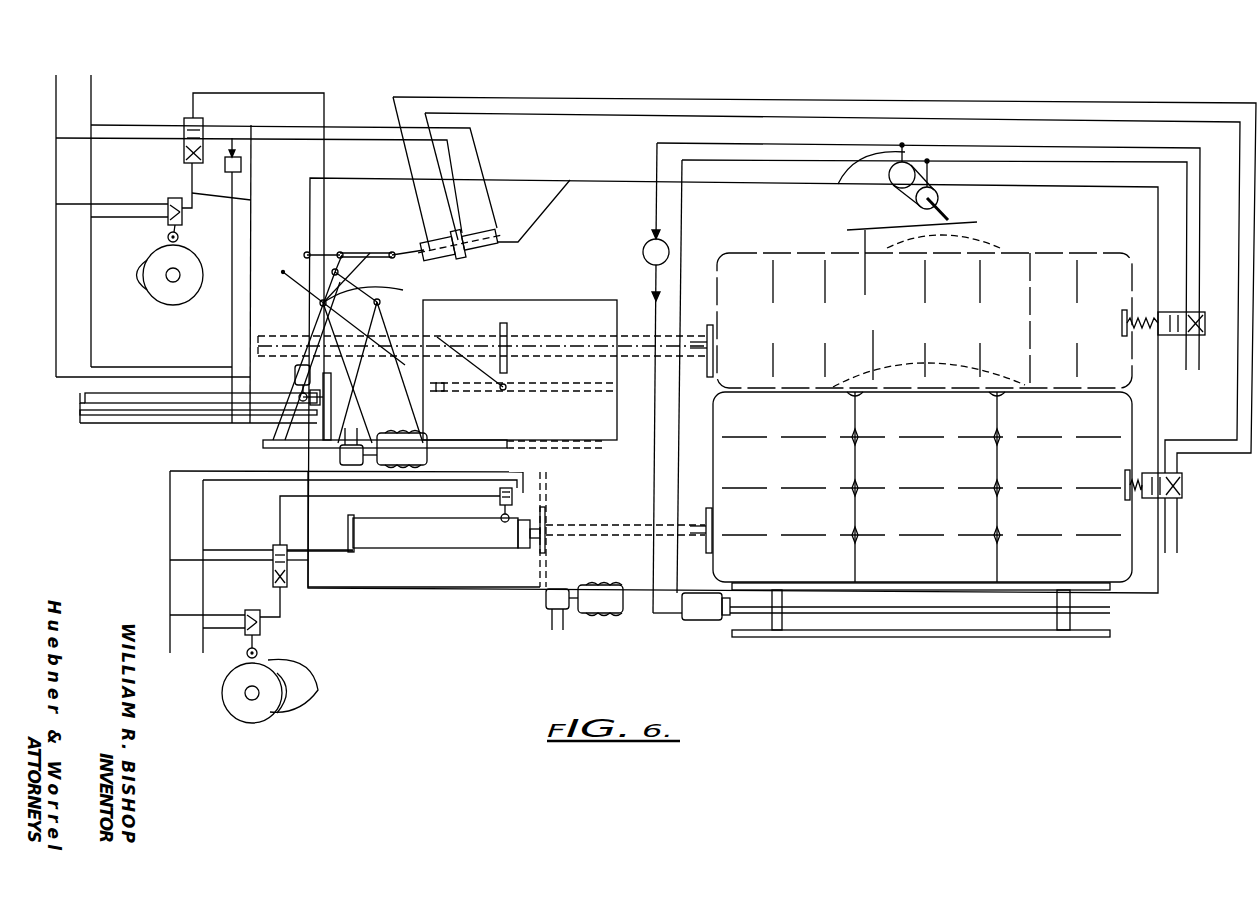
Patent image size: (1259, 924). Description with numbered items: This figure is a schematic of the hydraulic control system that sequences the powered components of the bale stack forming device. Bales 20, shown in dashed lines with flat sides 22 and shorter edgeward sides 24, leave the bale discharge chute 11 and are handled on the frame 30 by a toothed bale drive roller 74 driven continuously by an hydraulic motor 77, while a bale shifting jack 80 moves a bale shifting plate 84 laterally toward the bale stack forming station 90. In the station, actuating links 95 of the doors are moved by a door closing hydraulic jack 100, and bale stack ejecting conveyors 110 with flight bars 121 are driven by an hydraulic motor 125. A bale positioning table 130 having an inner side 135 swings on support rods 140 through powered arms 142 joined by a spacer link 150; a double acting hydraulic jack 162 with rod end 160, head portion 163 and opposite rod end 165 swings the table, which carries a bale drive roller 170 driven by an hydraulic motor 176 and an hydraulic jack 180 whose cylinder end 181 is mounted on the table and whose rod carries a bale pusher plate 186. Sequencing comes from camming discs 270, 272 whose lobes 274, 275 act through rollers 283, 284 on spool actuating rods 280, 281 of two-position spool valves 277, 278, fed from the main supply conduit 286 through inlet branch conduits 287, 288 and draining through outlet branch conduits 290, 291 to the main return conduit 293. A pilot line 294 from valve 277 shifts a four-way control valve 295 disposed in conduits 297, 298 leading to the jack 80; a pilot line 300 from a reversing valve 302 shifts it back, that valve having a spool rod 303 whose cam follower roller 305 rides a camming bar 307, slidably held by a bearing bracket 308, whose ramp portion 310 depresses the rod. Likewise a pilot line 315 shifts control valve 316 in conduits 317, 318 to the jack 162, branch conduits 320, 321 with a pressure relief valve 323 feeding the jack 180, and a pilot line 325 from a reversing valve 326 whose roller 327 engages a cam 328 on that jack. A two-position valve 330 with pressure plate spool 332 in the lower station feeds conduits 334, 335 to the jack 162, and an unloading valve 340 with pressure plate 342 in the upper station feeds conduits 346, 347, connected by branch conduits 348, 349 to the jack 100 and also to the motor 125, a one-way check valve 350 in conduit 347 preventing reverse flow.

The bale discharge chute 11 is at (528, 300).
The bales 20 is at (943, 380).
The flat sides 22 is at (755, 253).
The edgeward sides 24 is at (717, 305).
The frame 30 is at (645, 180).
The toothed bale drive roller 74 is at (603, 614).
The hydraulic motor 77 is at (556, 600).
The hydraulic bale shifting jack 80 is at (445, 548).
The bale shifting plate 84 is at (548, 516).
The bale stack forming station 90 is at (836, 332).
The actuating links 95 is at (912, 249).
The hydraulic jack 100 is at (905, 190).
The bale stack ejecting conveyors 110 is at (775, 633).
The flight bars 121 is at (893, 595).
The hydraulic motor 125 is at (705, 620).
The bale positioning table 130 is at (265, 445).
The inner side 135 is at (508, 447).
The support rods 140 is at (395, 292).
The powered arms 142 is at (265, 428).
The spacer link 150 is at (343, 250).
The rod end 160 is at (372, 250).
The double acting hydraulic jack 162 is at (460, 262).
The intermediate head portion 163 is at (455, 260).
The rod end 165 is at (492, 228).
The bale drive roller 170 is at (427, 459).
The hydraulic motor 176 is at (350, 470).
The hydraulic jack 180 is at (78, 415).
The cylinder end 181 is at (142, 412).
The bale pusher plate 186 is at (510, 325).
The camming disc 270 is at (252, 723).
The camming disc 272 is at (182, 305).
The lobes 274 is at (318, 690).
The lobes 275 is at (146, 300).
The two-position spool valve 277 is at (262, 622).
The two-position spool valve 278 is at (182, 225).
The spool actuating rod 280 is at (258, 645).
The spool actuating rod 281 is at (178, 242).
The roller 283 is at (258, 657).
The roller 284 is at (168, 238).
The main supply conduit 286 is at (93, 102).
The inlet branch conduit 287 is at (222, 655).
The inlet branch conduit 288 is at (100, 238).
The outlet branch conduit 290 is at (210, 615).
The outlet branch conduit 291 is at (140, 204).
The main return conduit 293 is at (56, 377).
The pilot line 294 is at (287, 583).
The four-way hydraulic control valve 295 is at (310, 578).
The conduit 297 is at (278, 573).
The conduit 298 is at (255, 552).
The pilot line 300 is at (280, 510).
The reversing valve 302 is at (498, 498).
The spool rod 303 is at (512, 518).
The cam follower roller 305 is at (512, 527).
The camming bar 307 is at (400, 549).
The bearing bracket 308 is at (543, 575).
The ramp portion 310 is at (360, 518).
The pilot line 315 is at (251, 200).
The four-way hydraulic control valve 316 is at (184, 158).
The conduit 317 is at (125, 125).
The conduit 318 is at (140, 138).
The branch conduit 320 is at (252, 230).
The branch conduit 321 is at (232, 323).
The two-way pressure relief valve 323 is at (241, 165).
The pilot line 325 is at (288, 93).
The reversing valve 326 is at (303, 365).
The roller 327 is at (310, 398).
The cam 328 is at (85, 392).
The two-position valve 330 is at (1188, 500).
The pressure plate spool 332 is at (1125, 487).
The conduit 334 is at (498, 97).
The conduit 335 is at (508, 113).
The two-position unloading valve 340 is at (1162, 308).
The pressure plate 342 is at (1122, 322).
The conduit 346 is at (1187, 240).
The conduit 347 is at (1200, 215).
The branch conduit 348 is at (952, 190).
The branch conduit 349 is at (862, 175).
The one-way check valve 350 is at (643, 252).